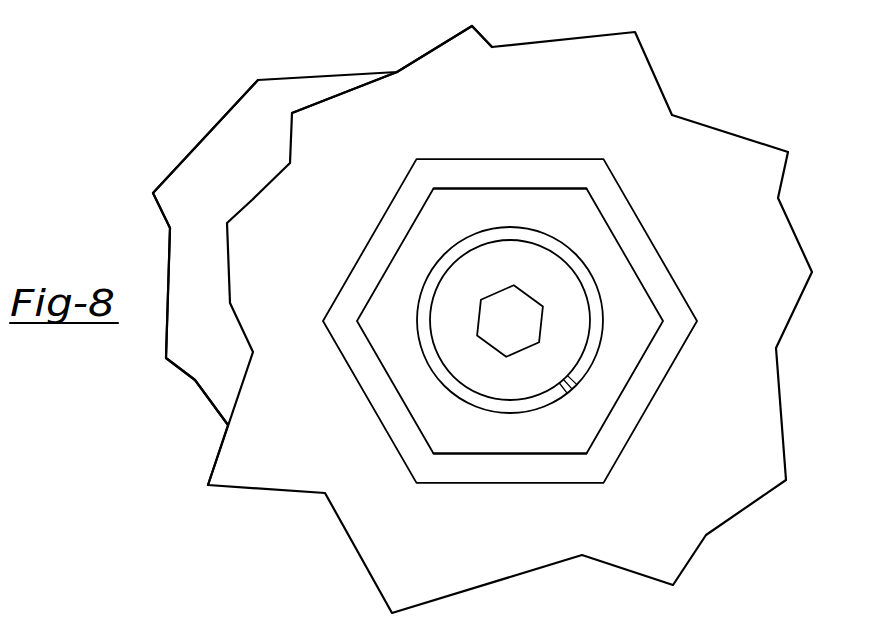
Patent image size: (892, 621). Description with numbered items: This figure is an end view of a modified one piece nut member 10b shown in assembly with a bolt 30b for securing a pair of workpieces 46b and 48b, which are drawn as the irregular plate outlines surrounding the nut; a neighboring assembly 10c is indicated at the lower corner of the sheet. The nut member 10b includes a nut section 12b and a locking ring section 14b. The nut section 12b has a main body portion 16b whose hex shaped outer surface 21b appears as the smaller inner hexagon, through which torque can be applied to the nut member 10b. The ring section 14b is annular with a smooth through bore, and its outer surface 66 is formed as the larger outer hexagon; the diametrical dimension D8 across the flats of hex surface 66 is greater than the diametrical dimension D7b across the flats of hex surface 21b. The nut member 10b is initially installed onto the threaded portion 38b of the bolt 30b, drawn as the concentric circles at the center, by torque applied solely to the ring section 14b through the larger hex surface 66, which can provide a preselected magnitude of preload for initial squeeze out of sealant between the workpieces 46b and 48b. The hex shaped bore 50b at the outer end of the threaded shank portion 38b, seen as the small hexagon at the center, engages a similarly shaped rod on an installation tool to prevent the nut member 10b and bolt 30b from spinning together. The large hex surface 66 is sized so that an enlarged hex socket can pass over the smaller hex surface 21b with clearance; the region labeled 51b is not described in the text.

The nut member 10b is at (627, 142).
The fastener assembly (adjacent) 10c is at (168, 620).
The nut section 12b is at (463, 200).
The locking ring section 14b is at (340, 322).
The main body portion 16b is at (423, 225).
The hex shaped outer surface 21b is at (393, 387).
The bolt 30b is at (547, 353).
The threaded portion 38b is at (557, 255).
The workpiece 46b is at (448, 60).
The workpiece 48b is at (242, 143).
The hex shaped bore 50b is at (523, 313).
The flange surface 51b is at (419, 124).
The outer surface 66 is at (545, 160).
The diametrical dimension D8 is at (511, 160).
The diametrical dimension D7b is at (491, 451).